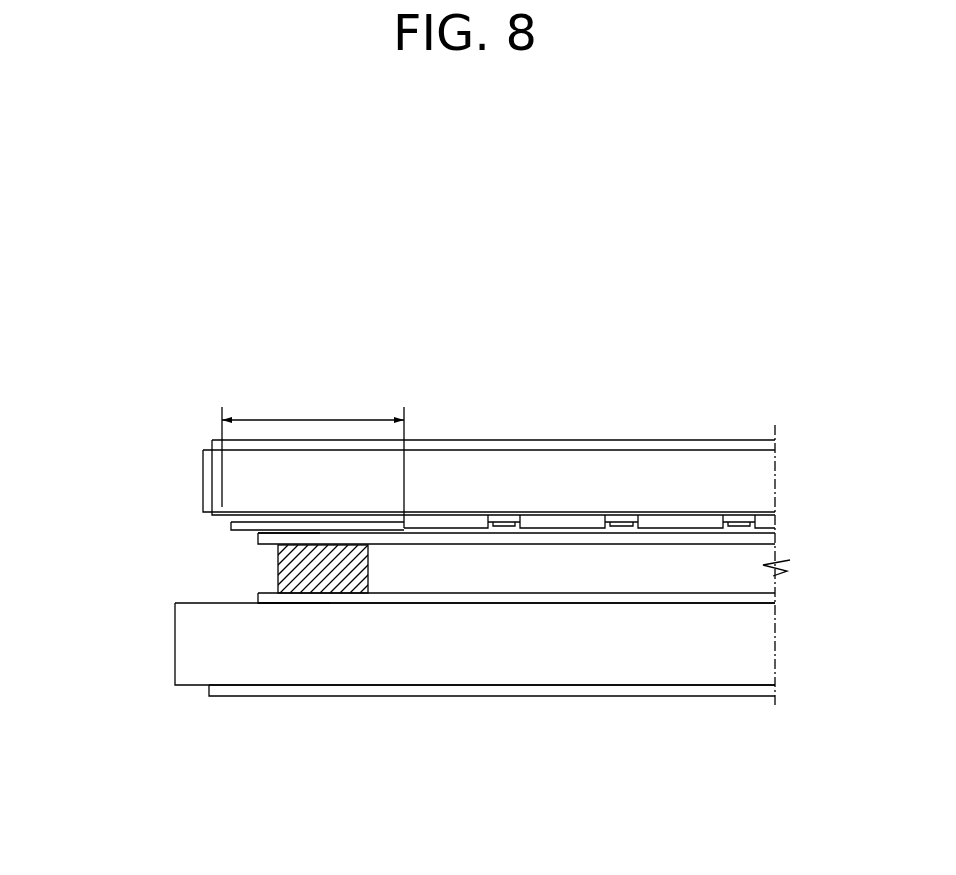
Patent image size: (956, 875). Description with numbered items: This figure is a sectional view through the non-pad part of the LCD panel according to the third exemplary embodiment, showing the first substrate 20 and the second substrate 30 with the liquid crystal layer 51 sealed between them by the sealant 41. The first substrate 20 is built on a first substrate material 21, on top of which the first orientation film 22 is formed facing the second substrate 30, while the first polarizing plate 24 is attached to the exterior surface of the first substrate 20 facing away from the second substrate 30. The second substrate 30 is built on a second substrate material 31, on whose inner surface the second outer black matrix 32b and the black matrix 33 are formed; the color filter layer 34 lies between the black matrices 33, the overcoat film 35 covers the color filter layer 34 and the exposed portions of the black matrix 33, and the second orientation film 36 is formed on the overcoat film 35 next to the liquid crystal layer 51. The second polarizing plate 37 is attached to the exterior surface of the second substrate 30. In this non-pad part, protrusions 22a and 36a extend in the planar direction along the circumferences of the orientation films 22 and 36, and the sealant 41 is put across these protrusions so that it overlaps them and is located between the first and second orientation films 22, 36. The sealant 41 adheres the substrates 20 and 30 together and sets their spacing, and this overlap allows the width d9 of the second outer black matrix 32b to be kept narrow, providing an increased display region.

The first substrate 20 is at (70, 552).
The first substrate material 21 is at (493, 668).
The first orientation film 22 is at (775, 597).
The protrusion 22a is at (310, 598).
The first polarizing plate 24 is at (623, 692).
The second substrate 30 is at (128, 390).
The second substrate material 31 is at (232, 478).
The second outer black matrix 32b is at (400, 517).
The black matrix 33 is at (620, 520).
The color filter layer 34 is at (560, 516).
The overcoat film 35 is at (232, 530).
The second orientation film 36 is at (775, 534).
The protrusion 36a is at (317, 537).
The second polarizing plate 37 is at (667, 441).
The sealant 41 is at (278, 563).
The liquid crystal layer 51 is at (790, 560).
The width of the second outer black matrix d9 is at (313, 455).